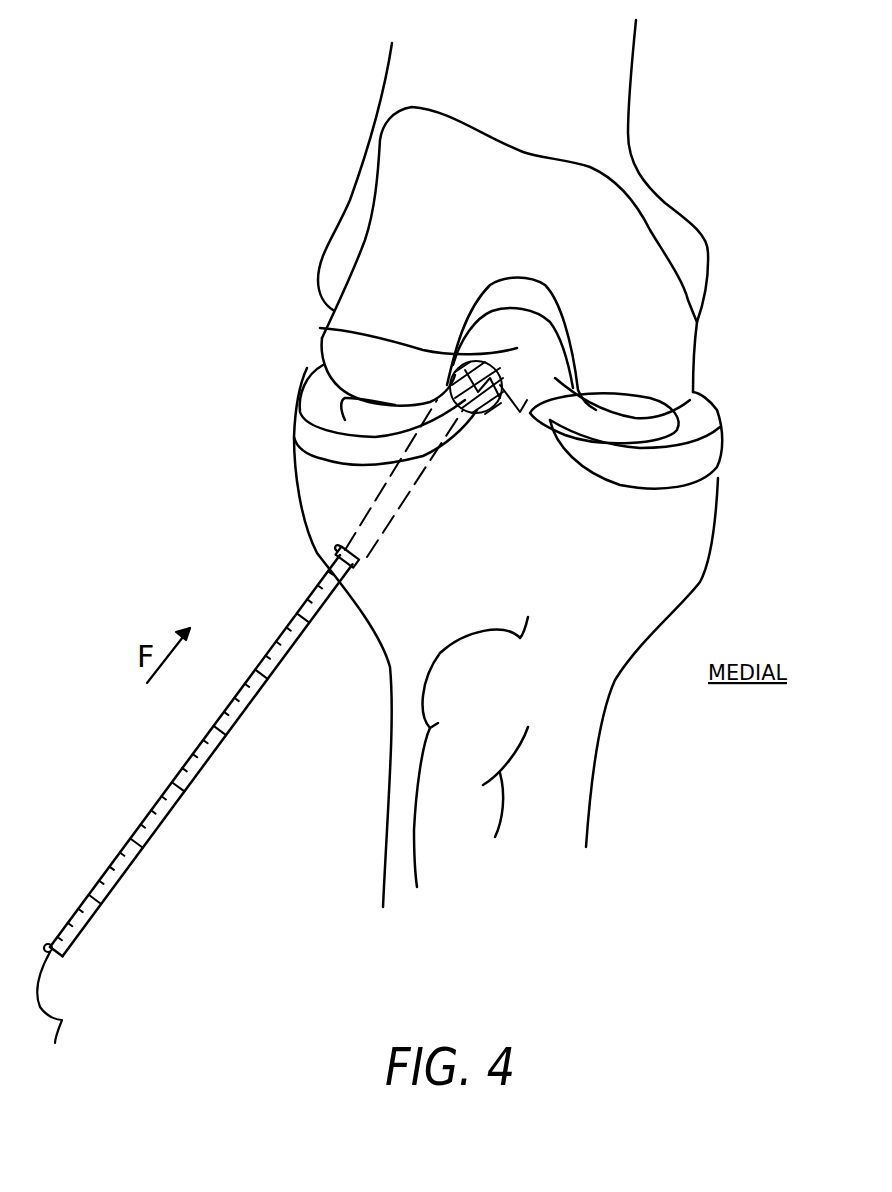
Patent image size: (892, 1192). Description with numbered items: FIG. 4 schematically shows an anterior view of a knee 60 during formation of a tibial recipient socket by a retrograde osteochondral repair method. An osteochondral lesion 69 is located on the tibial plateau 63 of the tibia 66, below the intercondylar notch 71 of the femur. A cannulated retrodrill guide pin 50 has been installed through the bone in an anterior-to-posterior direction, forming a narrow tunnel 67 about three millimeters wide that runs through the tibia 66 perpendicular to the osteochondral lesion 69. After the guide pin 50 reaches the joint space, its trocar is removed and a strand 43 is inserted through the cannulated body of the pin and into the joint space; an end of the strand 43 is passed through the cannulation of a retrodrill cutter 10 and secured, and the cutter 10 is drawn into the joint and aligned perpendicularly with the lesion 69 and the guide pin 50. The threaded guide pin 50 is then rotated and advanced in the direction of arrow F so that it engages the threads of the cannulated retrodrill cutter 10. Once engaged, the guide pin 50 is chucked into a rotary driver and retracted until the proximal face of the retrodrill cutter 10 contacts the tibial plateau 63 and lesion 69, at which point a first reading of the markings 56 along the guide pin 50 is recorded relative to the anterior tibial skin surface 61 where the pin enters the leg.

The retrodrill cutter 10 is at (503, 378).
The strand 43 is at (63, 1017).
The cannulated retrodrill guide pin 50 is at (172, 782).
The markings 56 is at (160, 825).
The knee 60 is at (350, 228).
The anterior tibial skin surface 61 is at (330, 548).
The tibial plateau 63 is at (297, 416).
The tibia 66 is at (695, 510).
The tunnel 67 is at (410, 492).
The osteochondral lesion 69 is at (707, 402).
The intercondylar notch 71 is at (320, 328).